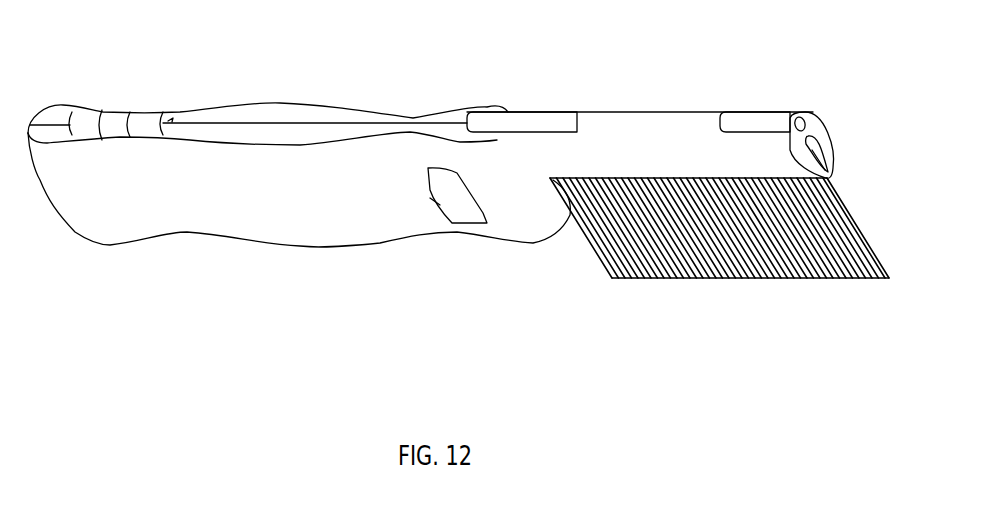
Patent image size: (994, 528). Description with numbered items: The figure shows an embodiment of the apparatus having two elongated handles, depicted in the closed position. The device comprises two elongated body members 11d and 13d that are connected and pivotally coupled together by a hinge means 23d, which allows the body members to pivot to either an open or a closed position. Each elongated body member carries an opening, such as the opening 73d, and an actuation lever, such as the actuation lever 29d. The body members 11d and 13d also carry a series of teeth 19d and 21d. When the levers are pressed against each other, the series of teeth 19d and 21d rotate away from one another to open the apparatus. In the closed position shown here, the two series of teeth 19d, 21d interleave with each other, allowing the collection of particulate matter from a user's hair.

The elongated body member 11d is at (285, 97).
The elongated body member 13d is at (270, 248).
The hinge means 23d is at (100, 113).
The series of teeth 19d is at (845, 232).
The series of teeth 21d is at (750, 278).
The actuation lever 29d is at (458, 205).
The opening 73d is at (435, 203).